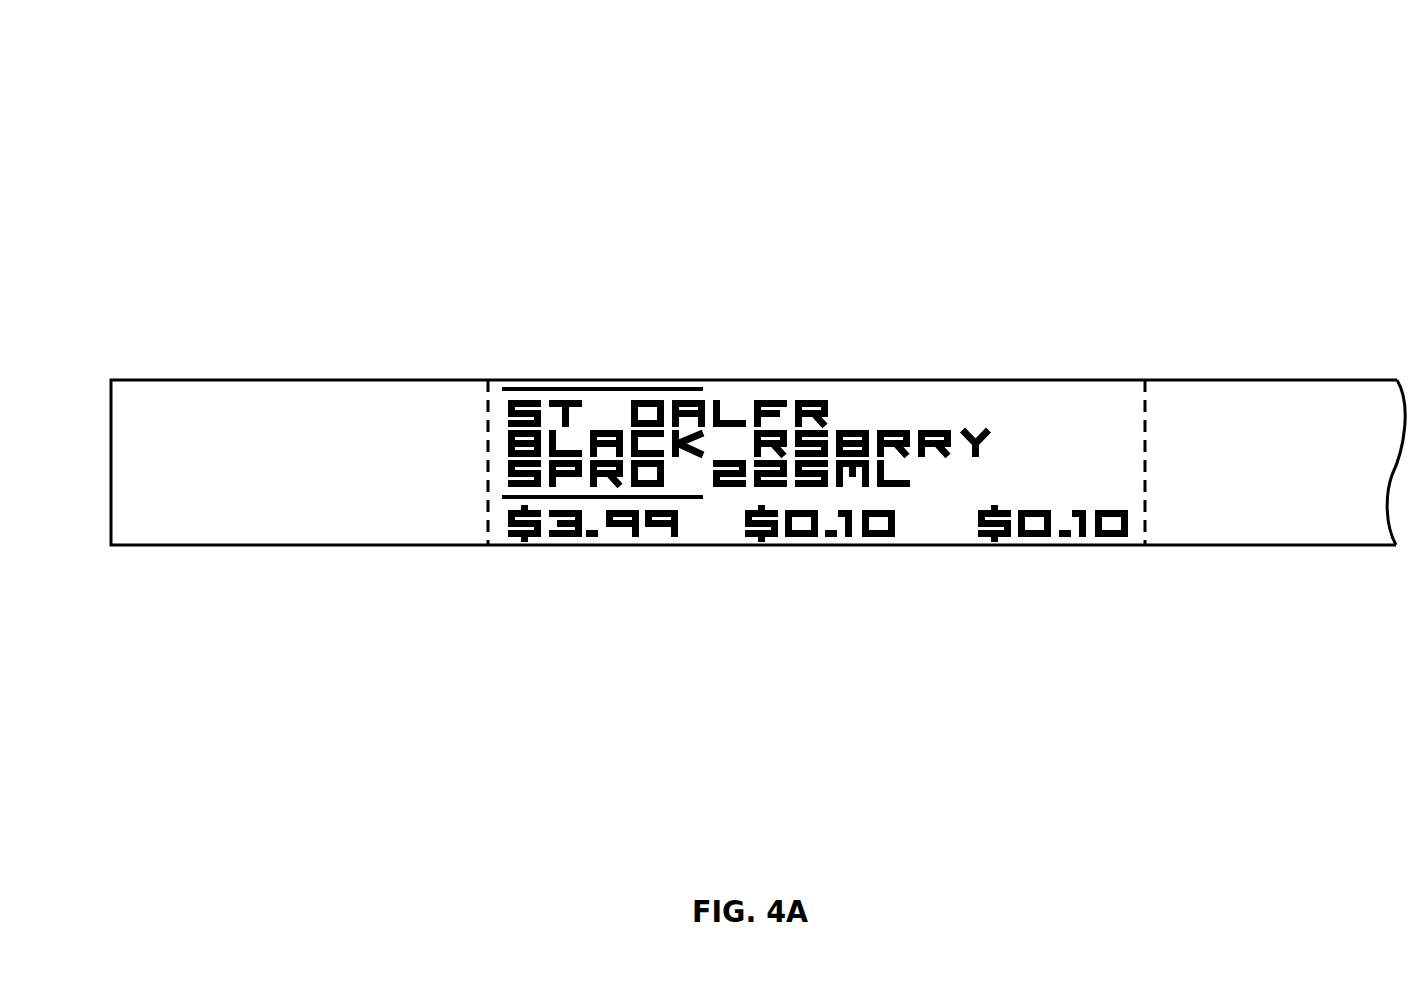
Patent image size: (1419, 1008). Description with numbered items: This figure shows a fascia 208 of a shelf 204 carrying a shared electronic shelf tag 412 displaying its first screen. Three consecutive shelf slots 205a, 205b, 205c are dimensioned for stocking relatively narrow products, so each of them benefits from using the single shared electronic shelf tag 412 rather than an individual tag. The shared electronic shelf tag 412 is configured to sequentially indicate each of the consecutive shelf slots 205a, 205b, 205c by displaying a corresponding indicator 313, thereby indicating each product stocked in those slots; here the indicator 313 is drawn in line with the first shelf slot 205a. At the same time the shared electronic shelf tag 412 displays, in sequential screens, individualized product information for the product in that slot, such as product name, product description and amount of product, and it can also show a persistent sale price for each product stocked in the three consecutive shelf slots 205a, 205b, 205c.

The shelf 204 is at (168, 124).
The shelf slot 205a is at (627, 367).
The shelf slot 205b is at (847, 367).
The shelf slot 205c is at (1117, 367).
The fascia 208 is at (182, 528).
The indicator 313 is at (502, 389).
The shared electronic shelf tag 412 is at (1148, 568).